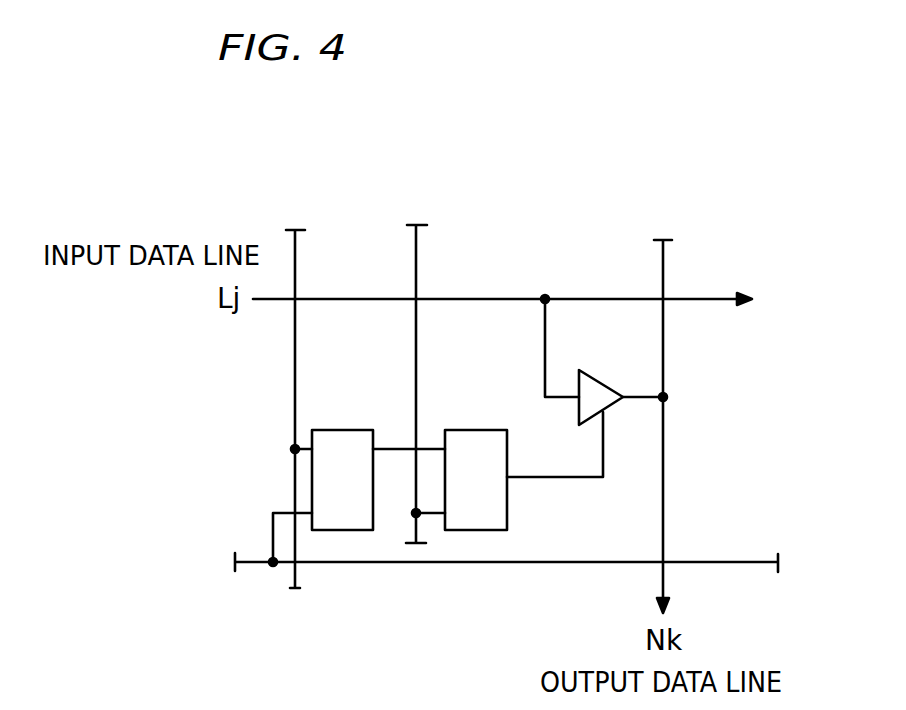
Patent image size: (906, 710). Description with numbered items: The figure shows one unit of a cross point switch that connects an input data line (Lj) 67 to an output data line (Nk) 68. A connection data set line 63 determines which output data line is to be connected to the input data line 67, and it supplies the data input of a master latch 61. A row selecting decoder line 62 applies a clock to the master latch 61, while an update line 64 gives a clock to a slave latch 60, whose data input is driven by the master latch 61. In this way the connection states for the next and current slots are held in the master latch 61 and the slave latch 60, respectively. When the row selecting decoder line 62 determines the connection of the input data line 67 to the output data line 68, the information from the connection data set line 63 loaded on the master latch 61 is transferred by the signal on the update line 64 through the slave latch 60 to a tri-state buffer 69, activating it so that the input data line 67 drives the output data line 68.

The slave latch 60 is at (470, 430).
The master latch 61 is at (330, 430).
The row selecting decoder line 62 is at (698, 562).
The connection data set line 63 is at (295, 323).
The update line 64 is at (416, 345).
The input data line 67 is at (705, 300).
The output data line 68 is at (663, 455).
The tri-state buffer 69 is at (593, 378).